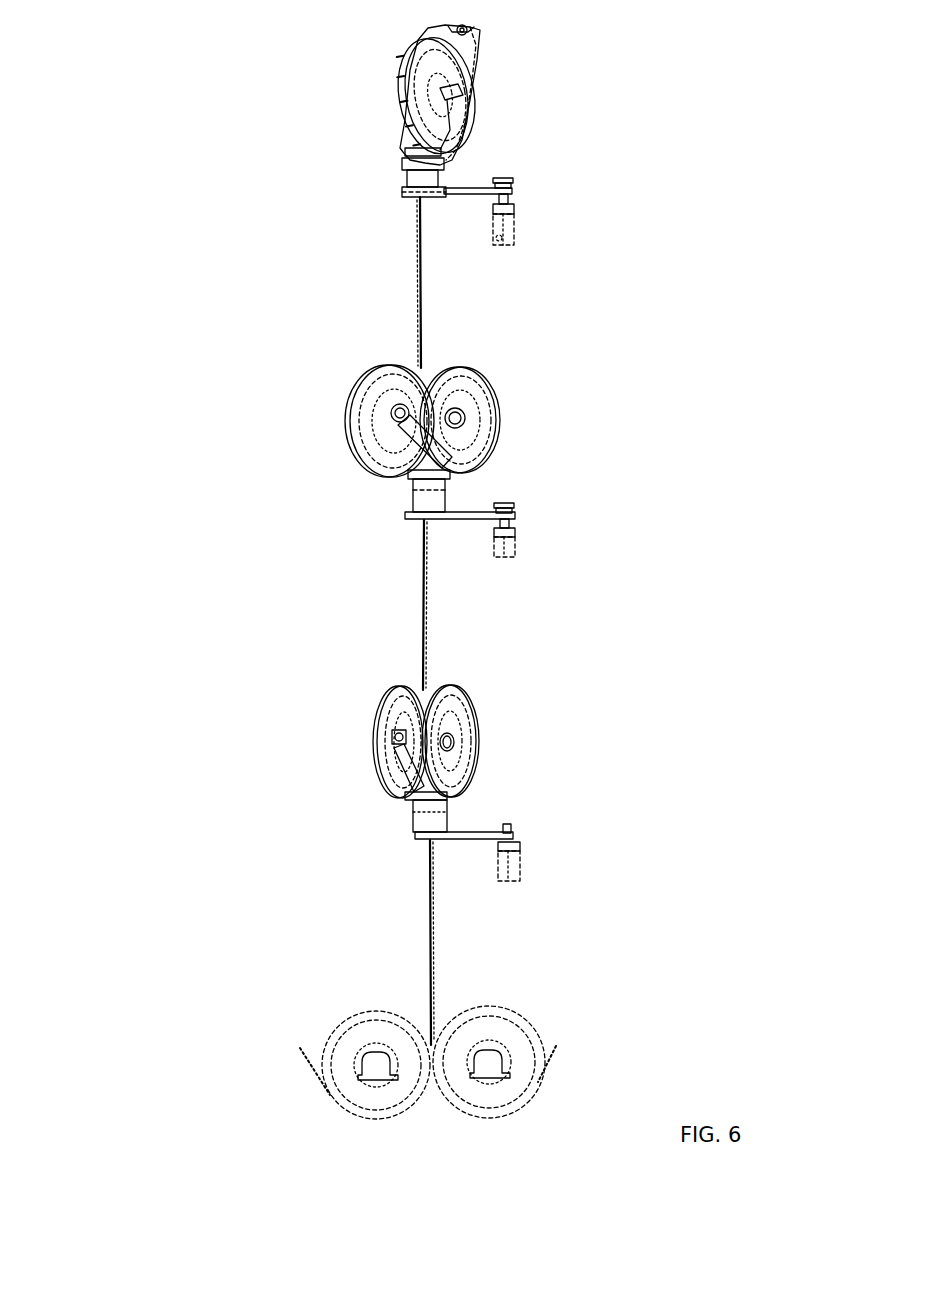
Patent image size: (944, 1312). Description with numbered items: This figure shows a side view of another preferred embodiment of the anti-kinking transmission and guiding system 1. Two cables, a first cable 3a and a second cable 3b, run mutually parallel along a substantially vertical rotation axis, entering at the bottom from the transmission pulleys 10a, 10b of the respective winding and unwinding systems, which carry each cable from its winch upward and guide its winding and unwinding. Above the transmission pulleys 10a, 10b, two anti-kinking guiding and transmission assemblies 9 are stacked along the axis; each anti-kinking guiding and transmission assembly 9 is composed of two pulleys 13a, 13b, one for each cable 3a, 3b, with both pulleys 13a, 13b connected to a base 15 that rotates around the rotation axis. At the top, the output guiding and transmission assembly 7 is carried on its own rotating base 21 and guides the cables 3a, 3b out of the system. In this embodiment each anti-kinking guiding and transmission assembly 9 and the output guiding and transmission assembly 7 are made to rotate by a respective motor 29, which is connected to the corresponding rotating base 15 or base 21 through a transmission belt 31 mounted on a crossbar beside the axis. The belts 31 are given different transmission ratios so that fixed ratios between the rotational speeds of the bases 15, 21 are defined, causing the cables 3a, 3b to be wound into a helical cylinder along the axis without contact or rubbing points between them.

The anti-kinking transmission and guiding system 1 is at (596, 150).
The output guiding and transmission assembly 7 is at (350, 69).
The base 21 is at (413, 183).
The transmission belt 31 is at (462, 192).
The motor 29 is at (508, 225).
The second cable 3b is at (414, 313).
The first cable 3a is at (428, 358).
The anti-kinking guiding and transmission assembly 9 is at (522, 374).
The pulley 13b is at (372, 411).
The pulley 13a is at (477, 420).
The base 15 is at (415, 488).
The transmission pulley 10b is at (368, 1019).
The transmission pulley 10a is at (488, 1072).